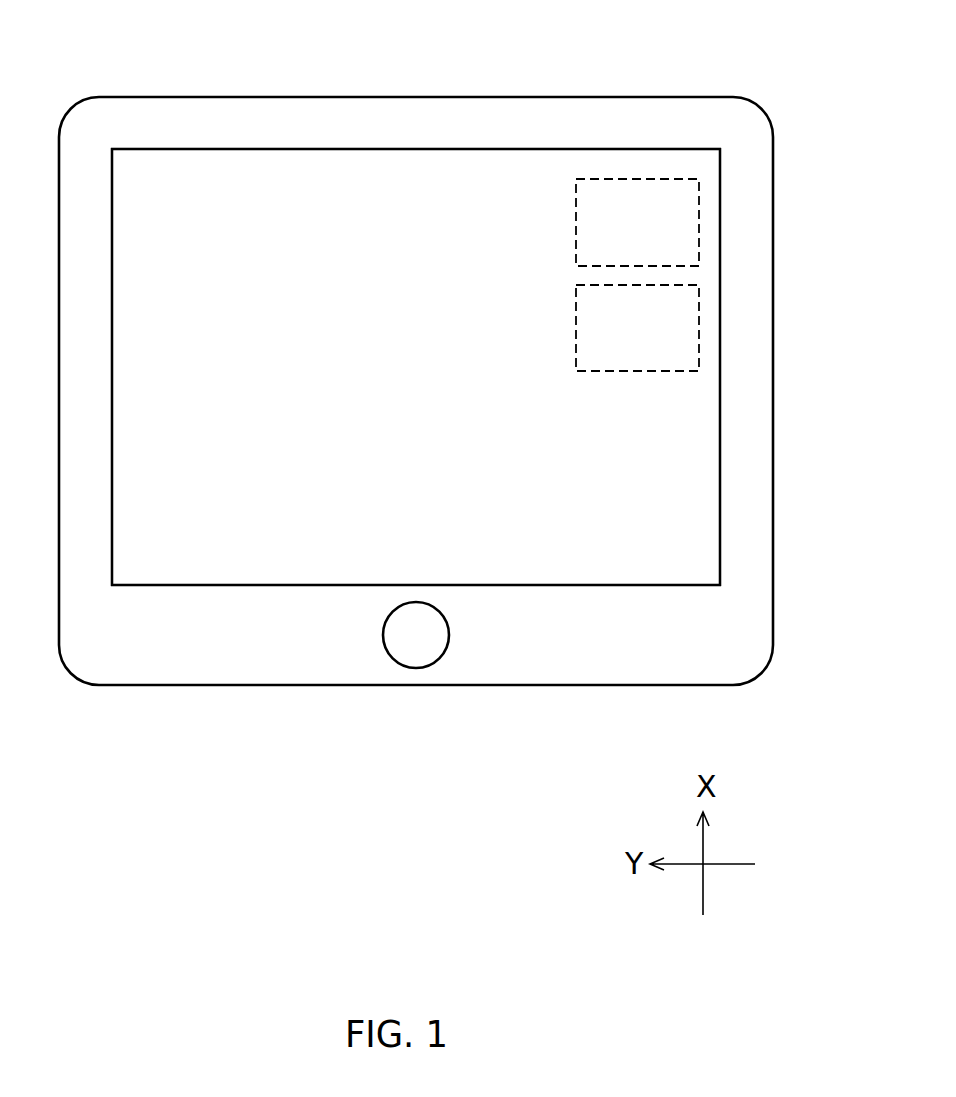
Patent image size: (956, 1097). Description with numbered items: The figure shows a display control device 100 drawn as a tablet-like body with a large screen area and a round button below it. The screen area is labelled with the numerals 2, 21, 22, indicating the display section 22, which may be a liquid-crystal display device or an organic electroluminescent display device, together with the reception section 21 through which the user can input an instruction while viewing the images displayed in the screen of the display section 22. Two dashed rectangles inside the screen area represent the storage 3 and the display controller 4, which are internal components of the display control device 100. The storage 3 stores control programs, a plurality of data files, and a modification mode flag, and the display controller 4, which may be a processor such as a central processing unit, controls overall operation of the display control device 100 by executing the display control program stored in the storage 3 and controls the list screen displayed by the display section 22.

The display control device 100 is at (523, 97).
The display panel 2 is at (255, 573).
The reception section 21 is at (416, 367).
The display section 22 is at (416, 367).
The storage 3 is at (699, 207).
The display controller 4 is at (699, 313).